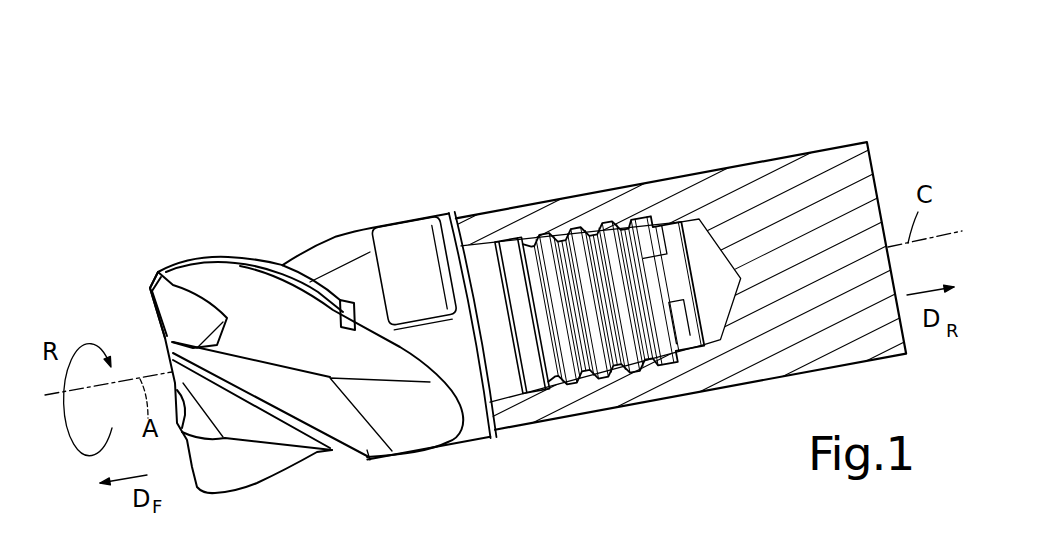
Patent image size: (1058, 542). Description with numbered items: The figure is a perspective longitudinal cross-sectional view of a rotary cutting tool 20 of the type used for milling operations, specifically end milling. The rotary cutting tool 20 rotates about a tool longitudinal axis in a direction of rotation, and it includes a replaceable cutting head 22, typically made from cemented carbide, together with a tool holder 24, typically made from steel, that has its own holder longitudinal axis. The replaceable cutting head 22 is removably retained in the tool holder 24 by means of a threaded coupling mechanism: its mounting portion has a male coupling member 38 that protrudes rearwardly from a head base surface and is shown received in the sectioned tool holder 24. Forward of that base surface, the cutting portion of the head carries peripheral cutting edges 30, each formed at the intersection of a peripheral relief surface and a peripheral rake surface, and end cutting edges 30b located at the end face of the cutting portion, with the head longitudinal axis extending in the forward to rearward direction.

The rotary cutting tool 20 is at (171, 200).
The replaceable cutting head 22 is at (341, 187).
The tool holder 24 is at (743, 114).
The peripheral cutting edge 30 is at (237, 278).
The end cutting edge 30b is at (152, 300).
The male coupling member 38 is at (596, 240).